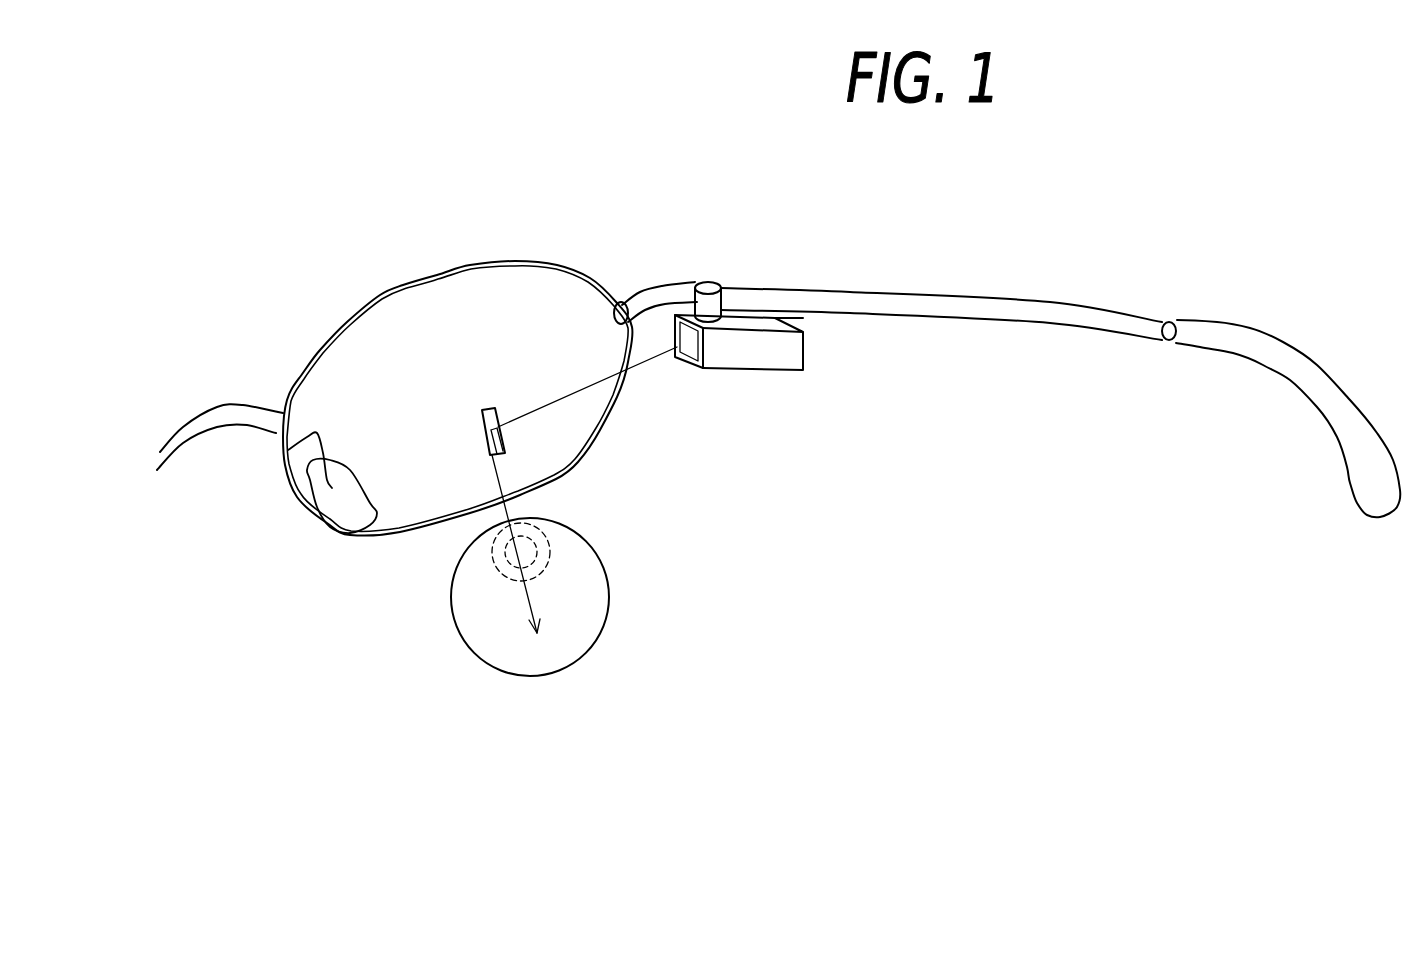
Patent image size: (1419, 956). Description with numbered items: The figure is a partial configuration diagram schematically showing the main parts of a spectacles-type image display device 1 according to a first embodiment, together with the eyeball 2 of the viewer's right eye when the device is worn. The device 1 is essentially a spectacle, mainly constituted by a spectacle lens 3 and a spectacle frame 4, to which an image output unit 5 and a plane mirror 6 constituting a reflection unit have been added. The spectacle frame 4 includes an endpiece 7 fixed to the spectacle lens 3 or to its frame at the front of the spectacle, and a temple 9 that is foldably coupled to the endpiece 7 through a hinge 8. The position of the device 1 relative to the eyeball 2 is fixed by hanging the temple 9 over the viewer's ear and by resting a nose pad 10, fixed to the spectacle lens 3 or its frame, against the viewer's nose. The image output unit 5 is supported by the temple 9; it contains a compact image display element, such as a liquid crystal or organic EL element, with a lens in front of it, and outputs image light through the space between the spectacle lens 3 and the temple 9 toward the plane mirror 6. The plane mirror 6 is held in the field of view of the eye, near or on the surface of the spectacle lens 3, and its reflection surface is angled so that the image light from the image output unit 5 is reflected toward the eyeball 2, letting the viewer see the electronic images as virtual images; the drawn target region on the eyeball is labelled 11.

The spectacles-type image display device 1 is at (1018, 533).
The eyeball 2 is at (590, 598).
The spectacle lens 3 is at (380, 320).
The spectacle frame 4 is at (825, 162).
The image output unit 5 is at (770, 358).
The plane mirror 6 is at (500, 442).
The endpiece 7 is at (647, 300).
The hinge 8 is at (708, 290).
The temple 9 is at (785, 298).
The nose pad 10 is at (335, 537).
The pupil 11 is at (535, 547).